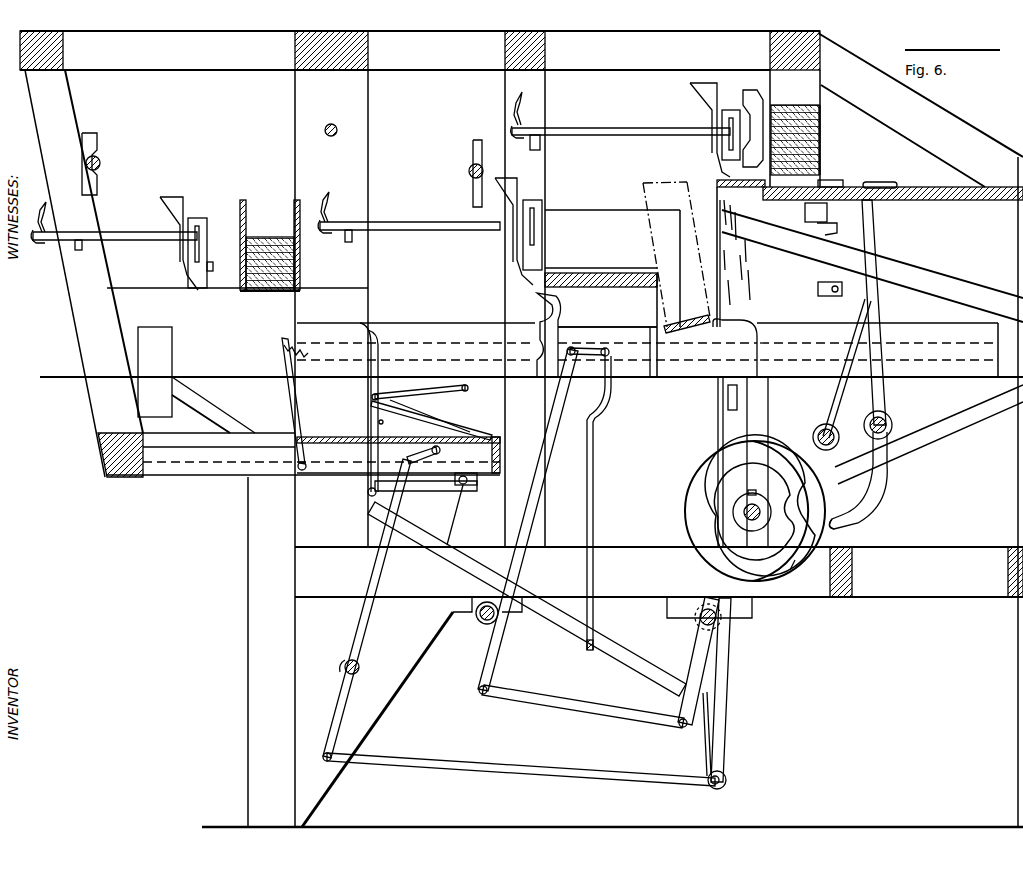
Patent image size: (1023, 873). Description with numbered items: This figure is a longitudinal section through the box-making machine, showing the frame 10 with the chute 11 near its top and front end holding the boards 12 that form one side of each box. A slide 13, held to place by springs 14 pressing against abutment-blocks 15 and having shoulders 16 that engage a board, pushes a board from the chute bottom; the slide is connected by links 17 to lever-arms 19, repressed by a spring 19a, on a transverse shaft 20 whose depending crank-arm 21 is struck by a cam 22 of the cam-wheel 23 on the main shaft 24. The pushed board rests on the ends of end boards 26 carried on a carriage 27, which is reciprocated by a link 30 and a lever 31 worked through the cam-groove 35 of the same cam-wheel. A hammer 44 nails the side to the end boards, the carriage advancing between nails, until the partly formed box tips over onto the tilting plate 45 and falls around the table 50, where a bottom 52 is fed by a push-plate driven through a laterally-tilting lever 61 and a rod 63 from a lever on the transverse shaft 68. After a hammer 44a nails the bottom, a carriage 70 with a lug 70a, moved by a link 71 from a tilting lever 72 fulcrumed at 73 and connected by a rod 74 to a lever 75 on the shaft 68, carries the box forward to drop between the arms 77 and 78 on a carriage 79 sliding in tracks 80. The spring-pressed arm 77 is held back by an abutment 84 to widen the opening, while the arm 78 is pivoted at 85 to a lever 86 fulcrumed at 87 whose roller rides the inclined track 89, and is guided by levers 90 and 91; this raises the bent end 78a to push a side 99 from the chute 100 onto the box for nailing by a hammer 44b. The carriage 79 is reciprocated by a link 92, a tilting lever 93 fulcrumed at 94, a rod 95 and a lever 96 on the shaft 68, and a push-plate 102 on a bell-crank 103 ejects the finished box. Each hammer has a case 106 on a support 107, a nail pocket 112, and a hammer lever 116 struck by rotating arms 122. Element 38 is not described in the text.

The frame 10 is at (88, 368).
The chute 11 is at (822, 138).
The boards 12 is at (788, 118).
The slide 13 is at (905, 200).
The springs 14 is at (837, 229).
The abutment-blocks 15 is at (827, 212).
The shoulders 16 is at (832, 181).
The links 17 is at (880, 182).
The lever-arms 19 is at (874, 260).
The spring 19a is at (930, 383).
The shaft 20 is at (893, 428).
The crank-arm 21 is at (872, 492).
The cam 22 is at (848, 522).
The cam-wheel 23 is at (800, 563).
The main shaft 24 is at (754, 522).
The end boards 26 is at (720, 218).
The carriage 27 is at (915, 282).
The link 30 is at (840, 285).
The lever 31 is at (838, 418).
The cam-groove 35 is at (720, 485).
The guide block 38 is at (748, 399).
The hammer 44 is at (620, 129).
The hammer 44a is at (483, 250).
The hammer 44b is at (153, 221).
The tilting plate 45 is at (692, 330).
The table 50 is at (618, 294).
The bottoms 52 is at (585, 272).
The laterally-tilting lever 61 is at (594, 462).
The rod 63 is at (588, 650).
The transverse shaft 68 is at (720, 620).
The carriage 70 is at (588, 342).
The lug 70a is at (540, 311).
The link 71 is at (598, 362).
The tilting lever 72 is at (540, 450).
The fulcrum 73 is at (496, 620).
The rod 74 is at (535, 700).
The lever 75 is at (705, 678).
The arm 77 is at (288, 392).
The arm 78 is at (385, 338).
The bent upper end 78a is at (368, 332).
The carriage 79 is at (450, 435).
The tracks 80 is at (228, 470).
The abutment 84 is at (290, 343).
The pivot 85 is at (368, 495).
The lever 86 is at (440, 492).
The fulcrum 87 is at (455, 510).
The inclined track 89 is at (470, 484).
The lever 90 is at (435, 386).
The lever 91 is at (468, 390).
The link 92 is at (408, 466).
The tilting lever 93 is at (386, 575).
The fulcrum 94 is at (360, 668).
The rod 95 is at (425, 758).
The tilting lever 96 is at (722, 733).
The sides 99 is at (275, 236).
The chute 100 is at (245, 202).
The push-plate 102 is at (155, 372).
The bell-crank 103 is at (212, 388).
The case 106 is at (200, 225).
The support 107 is at (756, 97).
The pocket 112 is at (172, 198).
The hammer shank or lever 116 is at (138, 242).
The arms 122 is at (46, 210).